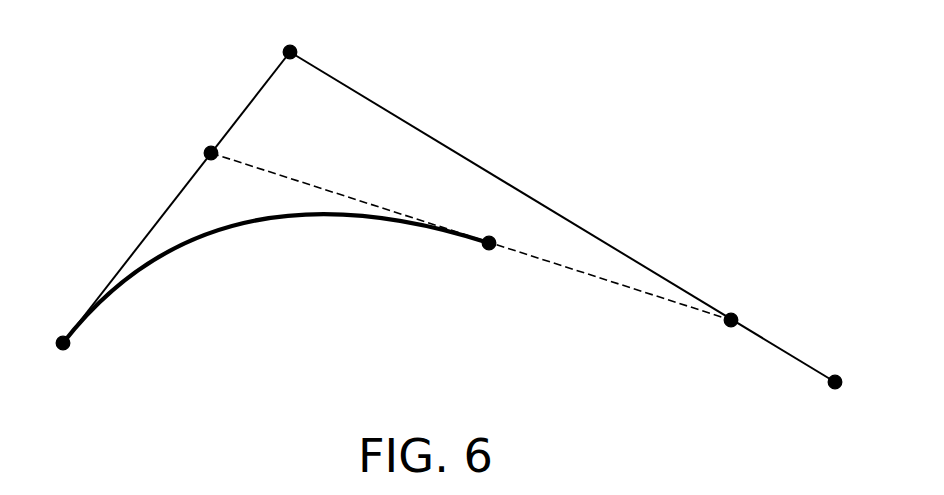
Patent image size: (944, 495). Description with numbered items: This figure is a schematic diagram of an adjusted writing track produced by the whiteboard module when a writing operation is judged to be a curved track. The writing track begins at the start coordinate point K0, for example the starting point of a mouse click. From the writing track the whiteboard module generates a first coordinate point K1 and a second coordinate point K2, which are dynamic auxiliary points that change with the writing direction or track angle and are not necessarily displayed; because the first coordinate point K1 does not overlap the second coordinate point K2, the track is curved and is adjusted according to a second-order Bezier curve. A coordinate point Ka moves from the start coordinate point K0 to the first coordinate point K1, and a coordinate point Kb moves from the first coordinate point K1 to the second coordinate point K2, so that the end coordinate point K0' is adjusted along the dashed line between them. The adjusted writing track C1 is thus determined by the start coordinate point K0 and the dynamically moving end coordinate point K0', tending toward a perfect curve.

The start coordinate point K0 is at (66, 361).
The first coordinate point K1 is at (290, 37).
The second coordinate point K2 is at (836, 401).
The coordinate point Ka is at (194, 144).
The coordinate point Kb is at (742, 304).
The end coordinate point K0' is at (491, 262).
The adjusted writing track C1 is at (257, 229).